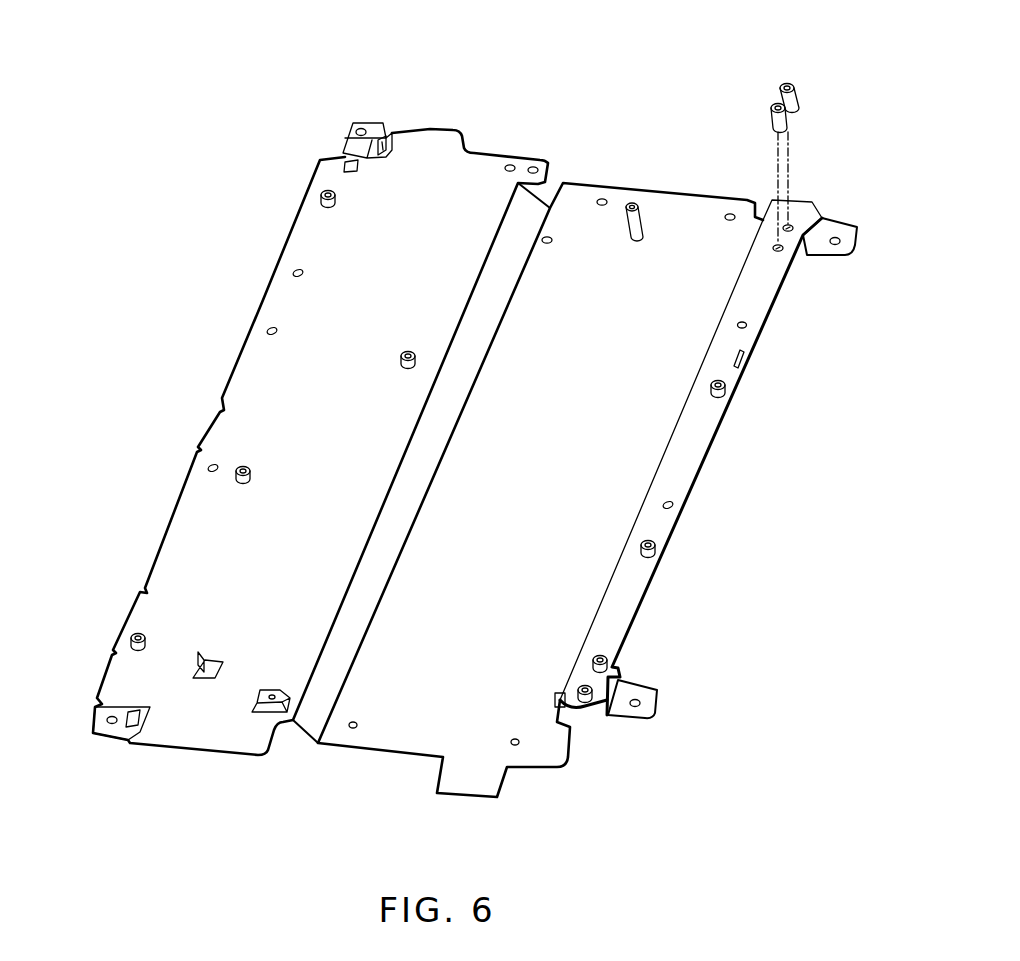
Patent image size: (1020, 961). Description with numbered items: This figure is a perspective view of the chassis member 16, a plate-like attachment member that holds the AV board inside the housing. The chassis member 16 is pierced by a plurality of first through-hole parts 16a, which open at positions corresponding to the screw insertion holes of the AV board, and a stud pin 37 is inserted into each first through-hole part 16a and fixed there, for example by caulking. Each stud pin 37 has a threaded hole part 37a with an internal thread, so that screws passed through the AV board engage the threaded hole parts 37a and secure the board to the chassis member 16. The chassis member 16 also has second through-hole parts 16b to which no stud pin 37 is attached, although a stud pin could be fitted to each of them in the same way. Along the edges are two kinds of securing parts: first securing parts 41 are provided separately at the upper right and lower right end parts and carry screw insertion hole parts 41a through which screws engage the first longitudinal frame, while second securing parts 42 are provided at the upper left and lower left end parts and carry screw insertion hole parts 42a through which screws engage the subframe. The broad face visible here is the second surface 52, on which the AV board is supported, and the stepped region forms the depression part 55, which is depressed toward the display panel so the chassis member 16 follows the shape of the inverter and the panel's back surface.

The chassis member 16 is at (457, 433).
The first through-hole part 16a is at (323, 205).
The second through-hole part 16b is at (292, 273).
The stud pin 37 is at (321, 195).
The threaded hole part 37a is at (328, 191).
The first securing part 41 is at (856, 228).
The screw insertion hole part 41a is at (840, 242).
The second securing part 42 is at (358, 122).
The screw insertion hole part 42a is at (366, 128).
The second surface 52 is at (320, 442).
The depression part 55 is at (432, 690).